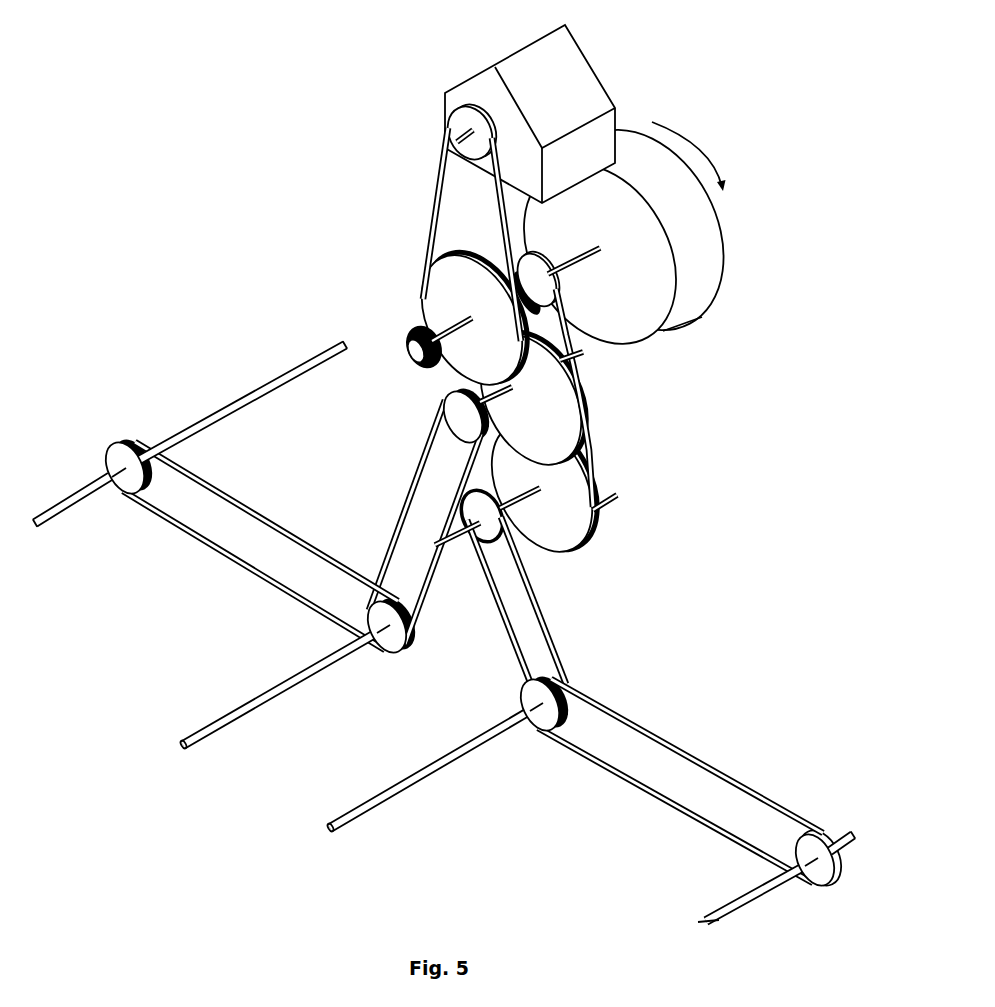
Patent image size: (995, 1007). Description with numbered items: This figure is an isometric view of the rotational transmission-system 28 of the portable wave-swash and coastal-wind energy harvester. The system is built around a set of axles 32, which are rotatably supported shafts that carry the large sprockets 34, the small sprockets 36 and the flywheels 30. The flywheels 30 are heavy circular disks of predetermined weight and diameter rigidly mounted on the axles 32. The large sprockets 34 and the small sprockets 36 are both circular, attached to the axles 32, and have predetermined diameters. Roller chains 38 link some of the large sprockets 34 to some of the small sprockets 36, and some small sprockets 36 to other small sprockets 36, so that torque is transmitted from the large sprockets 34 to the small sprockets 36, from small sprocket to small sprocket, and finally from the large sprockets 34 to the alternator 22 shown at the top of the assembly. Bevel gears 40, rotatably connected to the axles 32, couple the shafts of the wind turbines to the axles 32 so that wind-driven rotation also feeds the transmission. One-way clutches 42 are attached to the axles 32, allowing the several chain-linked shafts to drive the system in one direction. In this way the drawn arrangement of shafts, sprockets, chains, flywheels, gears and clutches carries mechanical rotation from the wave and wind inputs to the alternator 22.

The alternator 22 is at (608, 83).
The rotational transmission-system 28 is at (222, 178).
The flywheel 30 is at (718, 222).
The axle 32 is at (457, 142).
The large sprocket 34 is at (420, 297).
The small sprocket 36 is at (453, 117).
The roller chain 38 is at (435, 212).
The bevel gear 40 is at (408, 345).
The one-way clutch 42 is at (460, 415).